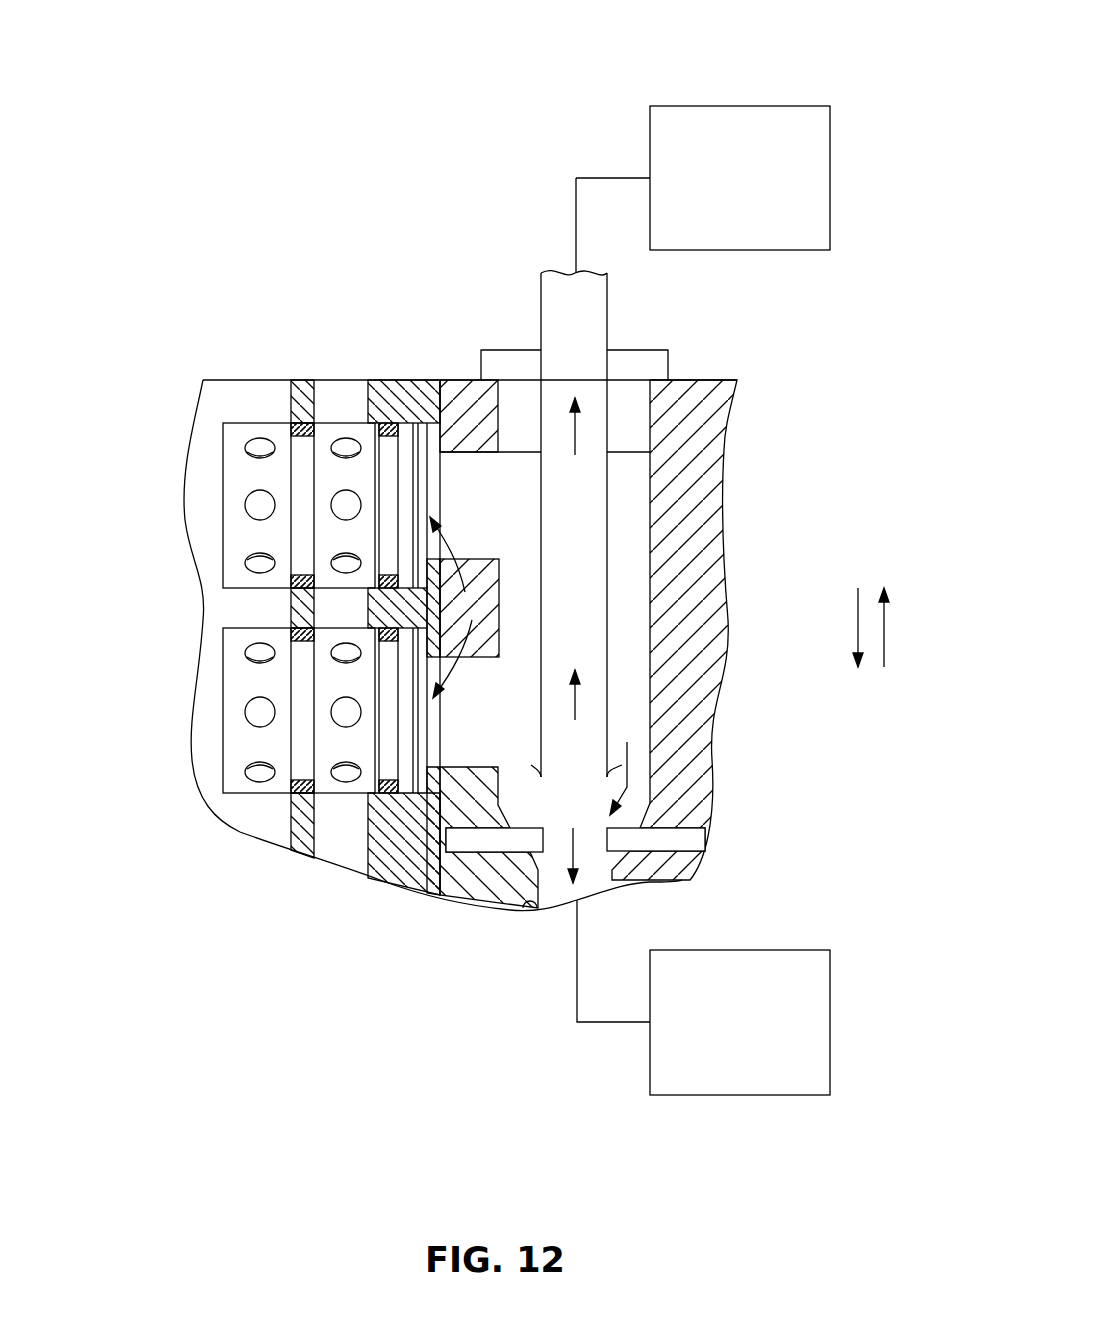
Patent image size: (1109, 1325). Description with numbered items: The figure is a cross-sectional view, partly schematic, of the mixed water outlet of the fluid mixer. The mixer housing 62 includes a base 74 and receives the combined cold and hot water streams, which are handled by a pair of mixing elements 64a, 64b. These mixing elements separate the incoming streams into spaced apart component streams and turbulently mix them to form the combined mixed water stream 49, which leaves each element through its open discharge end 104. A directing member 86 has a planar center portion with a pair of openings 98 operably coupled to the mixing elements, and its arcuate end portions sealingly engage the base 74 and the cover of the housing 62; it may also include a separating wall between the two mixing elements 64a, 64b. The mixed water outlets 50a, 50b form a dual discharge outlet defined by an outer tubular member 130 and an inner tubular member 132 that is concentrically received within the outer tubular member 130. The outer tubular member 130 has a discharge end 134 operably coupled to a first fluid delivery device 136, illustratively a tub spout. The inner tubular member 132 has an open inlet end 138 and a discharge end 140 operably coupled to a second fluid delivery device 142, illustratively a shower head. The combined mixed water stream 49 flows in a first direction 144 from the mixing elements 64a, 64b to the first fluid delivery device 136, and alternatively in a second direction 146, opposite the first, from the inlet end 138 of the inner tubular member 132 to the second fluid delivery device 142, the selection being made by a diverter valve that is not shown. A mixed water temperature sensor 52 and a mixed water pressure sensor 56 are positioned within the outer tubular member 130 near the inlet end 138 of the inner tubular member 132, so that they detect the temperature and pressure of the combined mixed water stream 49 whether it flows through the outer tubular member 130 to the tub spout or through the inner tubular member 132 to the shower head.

The second fluid delivery device 142 is at (742, 106).
The first fluid delivery device 136 is at (742, 1098).
The discharge end 140 is at (607, 315).
The outer tubular member 130 is at (650, 700).
The inner tubular member 132 is at (607, 638).
The open inlet end 138 is at (627, 742).
The mixed water pressure sensor 56 is at (705, 840).
The mixed water temperature sensor 52 is at (492, 840).
The housing 62 is at (380, 900).
The mixing element 64a is at (212, 473).
The mixing element 64b is at (212, 757).
The directing member 86 is at (300, 380).
The base 74 is at (405, 380).
The openings 98 is at (283, 622).
The open discharge end 104 is at (463, 607).
The combined mixed water stream 49 is at (522, 590).
The mixed water outlet 50a is at (630, 873).
The mixed water outlet 50b is at (526, 313).
The discharge end 134 is at (520, 905).
The first direction 144 is at (858, 622).
The second direction 146 is at (884, 628).